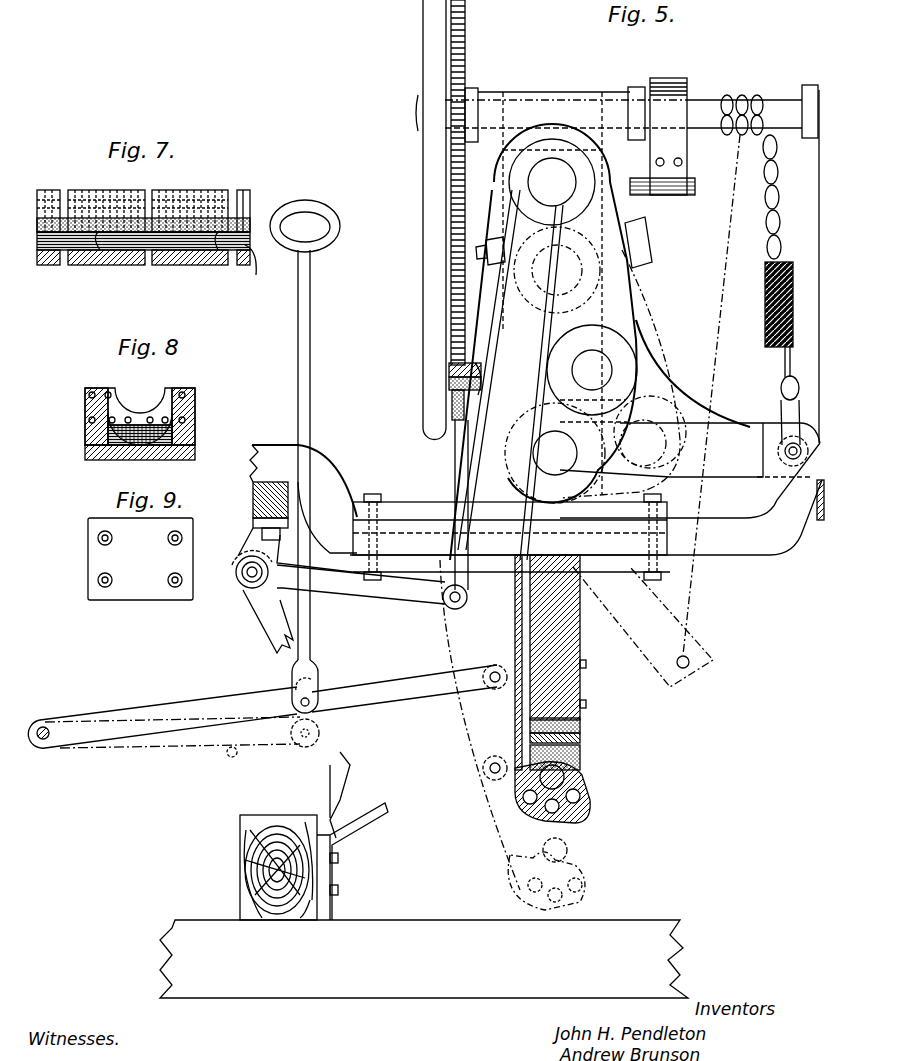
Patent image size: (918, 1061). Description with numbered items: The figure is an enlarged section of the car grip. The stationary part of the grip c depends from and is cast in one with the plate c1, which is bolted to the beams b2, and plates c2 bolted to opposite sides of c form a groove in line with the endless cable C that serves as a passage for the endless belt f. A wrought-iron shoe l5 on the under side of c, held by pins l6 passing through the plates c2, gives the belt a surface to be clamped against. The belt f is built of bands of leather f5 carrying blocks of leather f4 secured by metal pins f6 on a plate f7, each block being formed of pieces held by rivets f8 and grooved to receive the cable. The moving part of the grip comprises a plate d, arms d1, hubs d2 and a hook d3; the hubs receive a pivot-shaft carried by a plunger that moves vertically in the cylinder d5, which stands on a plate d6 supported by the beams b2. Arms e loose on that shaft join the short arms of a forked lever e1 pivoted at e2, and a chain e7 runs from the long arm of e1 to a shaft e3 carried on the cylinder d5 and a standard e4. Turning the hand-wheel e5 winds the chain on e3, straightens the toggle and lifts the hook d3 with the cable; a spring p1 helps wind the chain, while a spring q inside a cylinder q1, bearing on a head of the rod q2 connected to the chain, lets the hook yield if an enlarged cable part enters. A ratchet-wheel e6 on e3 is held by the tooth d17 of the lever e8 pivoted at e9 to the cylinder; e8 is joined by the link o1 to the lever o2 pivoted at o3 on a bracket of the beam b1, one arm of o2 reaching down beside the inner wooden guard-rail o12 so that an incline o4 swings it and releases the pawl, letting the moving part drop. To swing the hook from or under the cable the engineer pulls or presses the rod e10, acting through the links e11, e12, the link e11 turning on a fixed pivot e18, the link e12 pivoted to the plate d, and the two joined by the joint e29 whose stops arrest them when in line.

In FIG. 7, the endless belt f is at (132, 232).
In FIG. 5, the endless belt f is at (565, 770).
In FIG. 7, the blocks of leather f4 is at (50, 193).
In FIG. 8, the blocks of leather f4 is at (190, 395).
In FIG. 7, the bands of leather f5 is at (254, 268).
In FIG. 8, the bands of leather f5 is at (190, 440).
In FIG. 7, the metal pins f6 is at (93, 253).
In FIG. 8, the metal pins f6 is at (195, 405).
In FIG. 9, the metal pins f6 is at (100, 541).
In FIG. 7, the plate f7 is at (143, 269).
In FIG. 8, the plate f7 is at (103, 462).
In FIG. 9, the plate f7 is at (140, 559).
In FIG. 7, the rivets f8 is at (222, 195).
In FIG. 8, the rivets f8 is at (168, 390).
In FIG. 5, the hand-wheel e5 is at (419, 220).
In FIG. 5, the ratchet-wheel e6 is at (466, 30).
In FIG. 5, the tooth d17 is at (452, 366).
In FIG. 5, the pivot e9 is at (450, 380).
In FIG. 5, the pawl-lever e8 is at (452, 392).
In FIG. 5, the link o1 is at (455, 453).
In FIG. 5, the cylinder d5 is at (513, 95).
In FIG. 5, the spring p1 is at (672, 80).
In FIG. 5, the shaft e3 is at (708, 108).
In FIG. 5, the standard e4 is at (810, 170).
In FIG. 5, the chain e7 is at (762, 222).
In FIG. 5, the spring q is at (766, 322).
In FIG. 5, the cylinder q1 is at (766, 300).
In FIG. 5, the rod q2 is at (784, 360).
In FIG. 5, the hook portion d3 is at (610, 802).
In FIG. 5, the hubs d2 is at (556, 145).
In FIG. 5, the arms e is at (612, 218).
In FIG. 5, the pivot e2 is at (555, 453).
In FIG. 5, the forked lever e1 is at (740, 427).
In FIG. 5, the arms d1 is at (512, 420).
In FIG. 5, the plate d6 is at (420, 505).
In FIG. 5, the beams b2 is at (586, 499).
In FIG. 5, the beams b1 is at (808, 520).
In FIG. 5, the pivot o3 is at (245, 582).
In FIG. 5, the lever o2 is at (395, 585).
In FIG. 5, the rod e10 is at (305, 430).
In FIG. 5, the joint e29 is at (312, 702).
In FIG. 5, the link e12 is at (416, 725).
In FIG. 5, the link e11 is at (164, 714).
In FIG. 5, the fixed pivot e18 is at (46, 727).
In FIG. 5, the plate d is at (513, 620).
In FIG. 5, the stationary part of the grip c is at (582, 638).
In FIG. 5, the plate c1 is at (620, 565).
In FIG. 5, the pins l6 is at (585, 728).
In FIG. 5, the shoe l5 is at (585, 740).
In FIG. 5, the plates c2 is at (585, 752).
In FIG. 5, the endless cable C is at (570, 780).
In FIG. 5, the inner wooden guard-rail o12 is at (268, 820).
In FIG. 5, the incline o4 is at (382, 808).